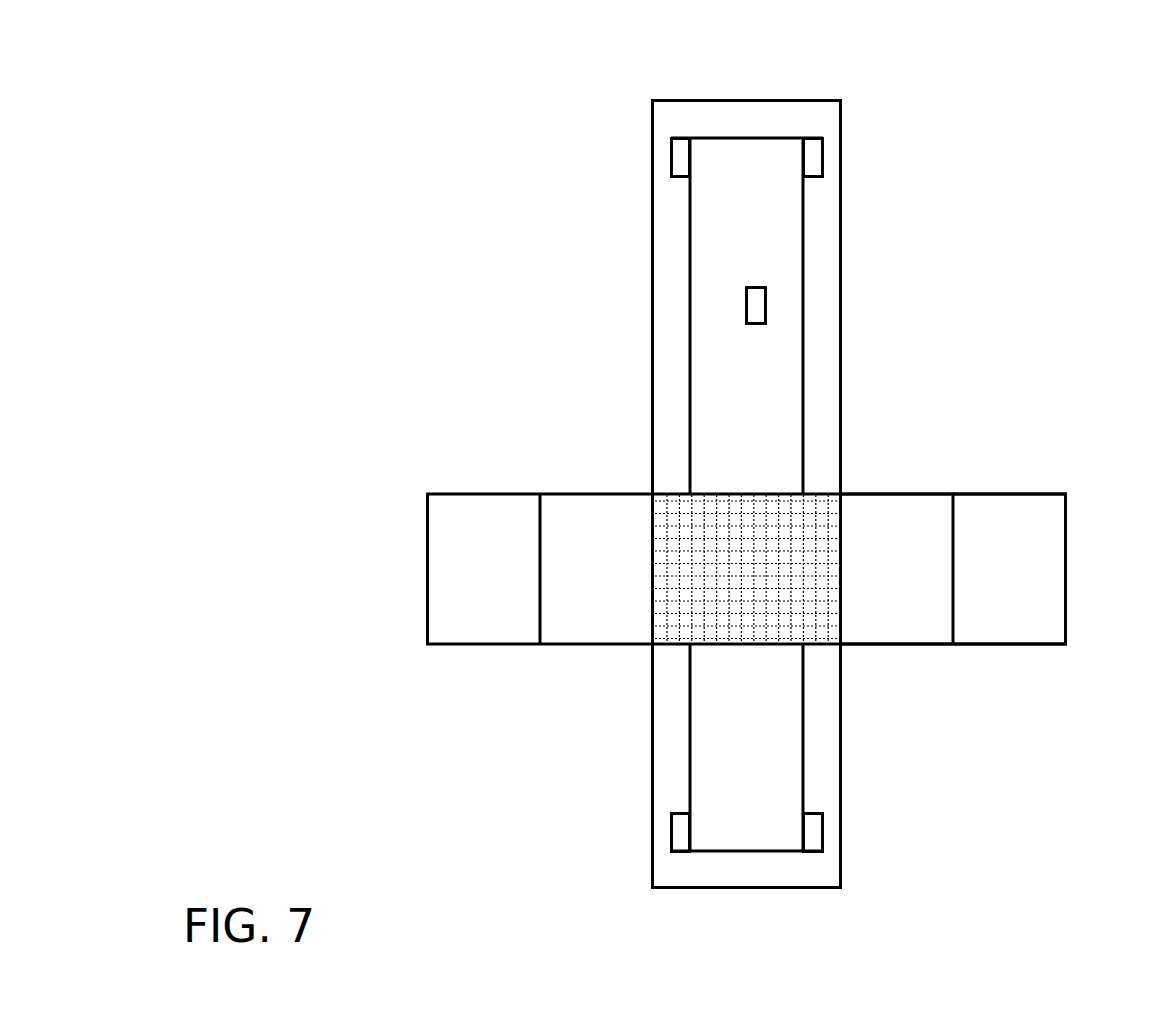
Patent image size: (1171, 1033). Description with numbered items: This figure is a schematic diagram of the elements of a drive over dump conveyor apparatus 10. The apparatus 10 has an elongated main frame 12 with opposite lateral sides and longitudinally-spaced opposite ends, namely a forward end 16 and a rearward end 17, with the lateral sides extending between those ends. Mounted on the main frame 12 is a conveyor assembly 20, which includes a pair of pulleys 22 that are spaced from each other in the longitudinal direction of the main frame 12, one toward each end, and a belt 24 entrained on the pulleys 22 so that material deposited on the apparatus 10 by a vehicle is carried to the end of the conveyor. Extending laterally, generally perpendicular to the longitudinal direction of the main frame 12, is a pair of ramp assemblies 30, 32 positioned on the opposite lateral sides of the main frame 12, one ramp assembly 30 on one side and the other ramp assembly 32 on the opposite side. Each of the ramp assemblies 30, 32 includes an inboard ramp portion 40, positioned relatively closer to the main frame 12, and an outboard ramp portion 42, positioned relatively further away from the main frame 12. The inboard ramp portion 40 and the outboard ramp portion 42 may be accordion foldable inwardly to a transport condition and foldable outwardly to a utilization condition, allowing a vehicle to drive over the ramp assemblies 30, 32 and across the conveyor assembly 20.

The drive over dump conveyor apparatus 10 is at (933, 118).
The main frame 12 is at (842, 323).
The forward end 16 is at (615, 878).
The rearward end 17 is at (605, 118).
The conveyor assembly 20 is at (682, 267).
The pulleys 22 is at (822, 157).
The belt 24 is at (803, 248).
The ramp assembly 30 is at (578, 683).
The ramp assembly 32 is at (897, 685).
The inboard ramp portion 40 is at (858, 492).
The outboard ramp portion 42 is at (972, 492).